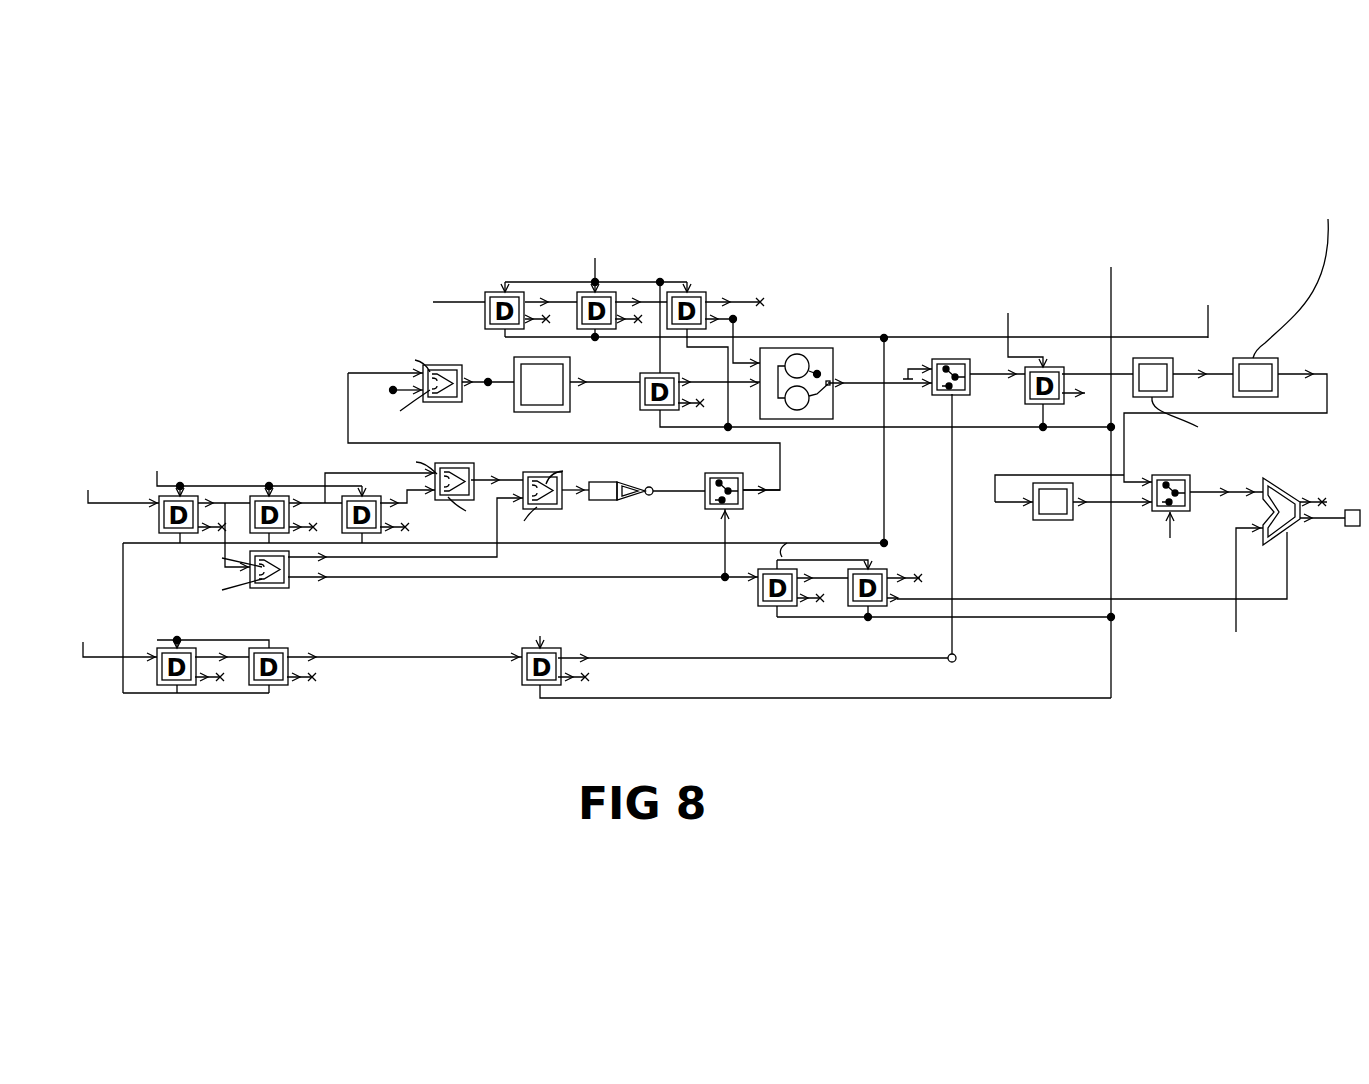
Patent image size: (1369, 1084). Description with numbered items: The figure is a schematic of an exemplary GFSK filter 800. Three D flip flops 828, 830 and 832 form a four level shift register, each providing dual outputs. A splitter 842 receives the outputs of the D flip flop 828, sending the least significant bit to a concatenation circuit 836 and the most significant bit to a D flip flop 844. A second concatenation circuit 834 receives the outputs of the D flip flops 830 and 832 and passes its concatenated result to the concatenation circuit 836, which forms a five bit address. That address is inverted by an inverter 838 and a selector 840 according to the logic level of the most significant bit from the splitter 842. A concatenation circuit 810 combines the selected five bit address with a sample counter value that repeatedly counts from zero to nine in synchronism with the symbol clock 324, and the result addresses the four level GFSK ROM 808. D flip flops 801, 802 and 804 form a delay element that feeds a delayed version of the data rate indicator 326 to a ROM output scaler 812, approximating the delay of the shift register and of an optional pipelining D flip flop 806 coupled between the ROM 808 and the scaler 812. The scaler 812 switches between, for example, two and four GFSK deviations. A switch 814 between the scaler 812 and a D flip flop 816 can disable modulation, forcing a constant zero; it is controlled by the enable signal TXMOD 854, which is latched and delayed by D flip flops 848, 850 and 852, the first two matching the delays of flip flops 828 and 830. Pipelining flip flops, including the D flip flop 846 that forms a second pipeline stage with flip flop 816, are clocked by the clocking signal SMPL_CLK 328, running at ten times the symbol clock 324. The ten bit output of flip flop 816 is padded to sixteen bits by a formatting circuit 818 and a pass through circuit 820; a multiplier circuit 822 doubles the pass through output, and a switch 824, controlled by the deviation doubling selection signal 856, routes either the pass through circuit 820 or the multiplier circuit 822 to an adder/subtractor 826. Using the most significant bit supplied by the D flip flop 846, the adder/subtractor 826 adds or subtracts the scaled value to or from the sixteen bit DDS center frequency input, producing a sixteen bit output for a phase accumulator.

The GFSK filter 800 is at (773, 231).
The data rate indicator 326 is at (413, 314).
The clocking signal SMPL_CLK 328 is at (1134, 266).
The symbol clock 324 is at (1219, 305).
The D flip flop 801 is at (485, 314).
The D flip flop 802 is at (577, 300).
The D flip flop 804 is at (707, 292).
The D flip flop 806 is at (640, 406).
The 4 level GFSK ROM 808 is at (571, 368).
The concatenation circuit 810 is at (470, 415).
The ROM output scaler 812 is at (835, 363).
The switch 814 is at (972, 397).
The D flip flop 816 is at (1047, 363).
The formatting circuit 818 is at (1159, 358).
The pass through circuit 820 is at (1275, 358).
The multiplier circuit 822 is at (1058, 525).
The switch 824 is at (1170, 472).
The adder/subtractor 826 is at (1292, 486).
The D flip flop 828 is at (159, 517).
The D flip flop 830 is at (291, 501).
The D flip flop 832 is at (388, 513).
The concatenation circuit 834 is at (471, 465).
The concatenation circuit 836 is at (546, 509).
The inverter 838 is at (630, 471).
The selector 840 is at (745, 502).
The splitter 842 is at (267, 589).
The D flip flop 844 is at (756, 589).
The D flip flop 846 is at (879, 568).
The D flip flop 848 is at (155, 669).
The D flip flop 850 is at (283, 688).
The D flip flop 852 is at (520, 671).
The enable signal TXMOD 854 is at (63, 636).
The selection signal DEV_2X 856 is at (1138, 556).